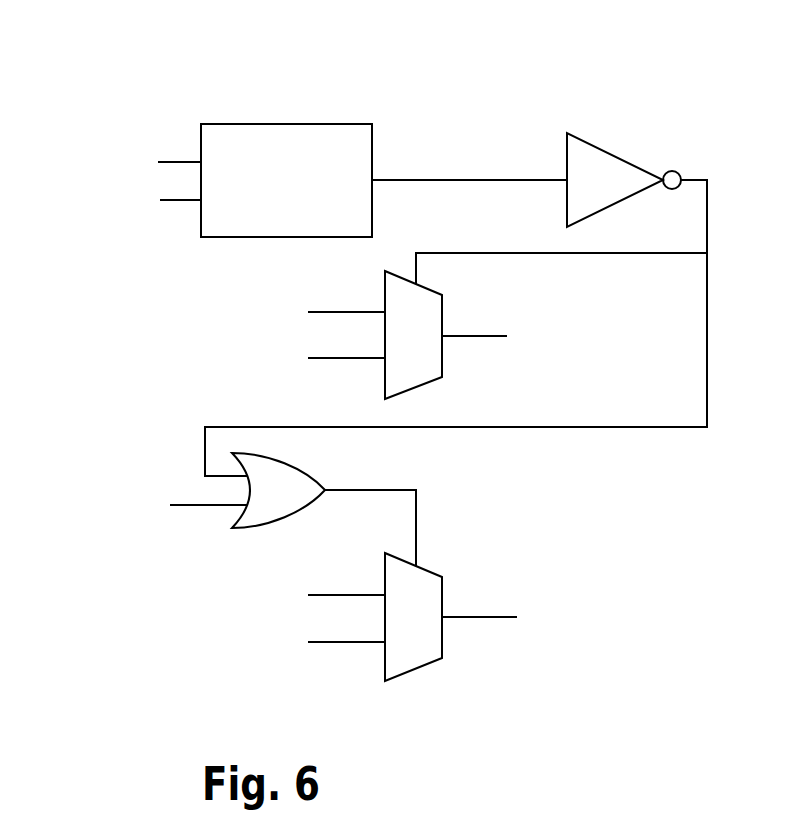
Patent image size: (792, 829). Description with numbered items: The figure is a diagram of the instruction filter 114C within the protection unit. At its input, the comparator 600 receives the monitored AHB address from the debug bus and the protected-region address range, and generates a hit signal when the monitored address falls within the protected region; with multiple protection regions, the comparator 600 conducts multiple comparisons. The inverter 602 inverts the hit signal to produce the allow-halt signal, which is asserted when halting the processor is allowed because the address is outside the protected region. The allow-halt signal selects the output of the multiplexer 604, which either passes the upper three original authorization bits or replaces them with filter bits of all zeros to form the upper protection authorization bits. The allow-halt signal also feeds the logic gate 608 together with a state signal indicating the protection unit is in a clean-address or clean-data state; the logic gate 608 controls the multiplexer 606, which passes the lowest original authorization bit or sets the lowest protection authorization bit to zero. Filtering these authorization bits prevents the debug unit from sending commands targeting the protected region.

The instruction filter 114C is at (168, 70).
The comparator 600 is at (302, 202).
The inverter 602 is at (615, 189).
The multiplexer 604 is at (433, 346).
The multiplexer 606 is at (433, 626).
The logic gate 608 is at (292, 499).